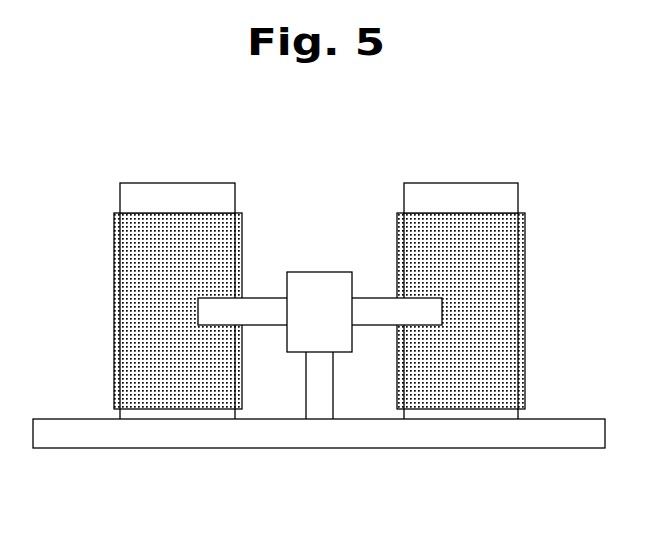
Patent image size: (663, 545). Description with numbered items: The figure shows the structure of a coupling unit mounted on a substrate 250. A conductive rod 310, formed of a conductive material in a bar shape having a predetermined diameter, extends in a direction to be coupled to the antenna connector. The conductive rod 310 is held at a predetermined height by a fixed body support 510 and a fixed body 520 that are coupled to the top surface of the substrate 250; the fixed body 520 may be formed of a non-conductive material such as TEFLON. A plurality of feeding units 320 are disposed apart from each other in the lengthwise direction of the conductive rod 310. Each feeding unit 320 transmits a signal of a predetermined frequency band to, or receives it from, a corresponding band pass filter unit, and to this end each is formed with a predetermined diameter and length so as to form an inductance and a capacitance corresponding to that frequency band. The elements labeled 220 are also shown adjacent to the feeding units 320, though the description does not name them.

The magnet 220 is at (178, 183).
The substrate 250 is at (561, 449).
The conductive rod 310 is at (377, 305).
The feeding units 320 is at (113, 275).
The fixed body support 510 is at (310, 392).
The fixed body 520 is at (320, 272).